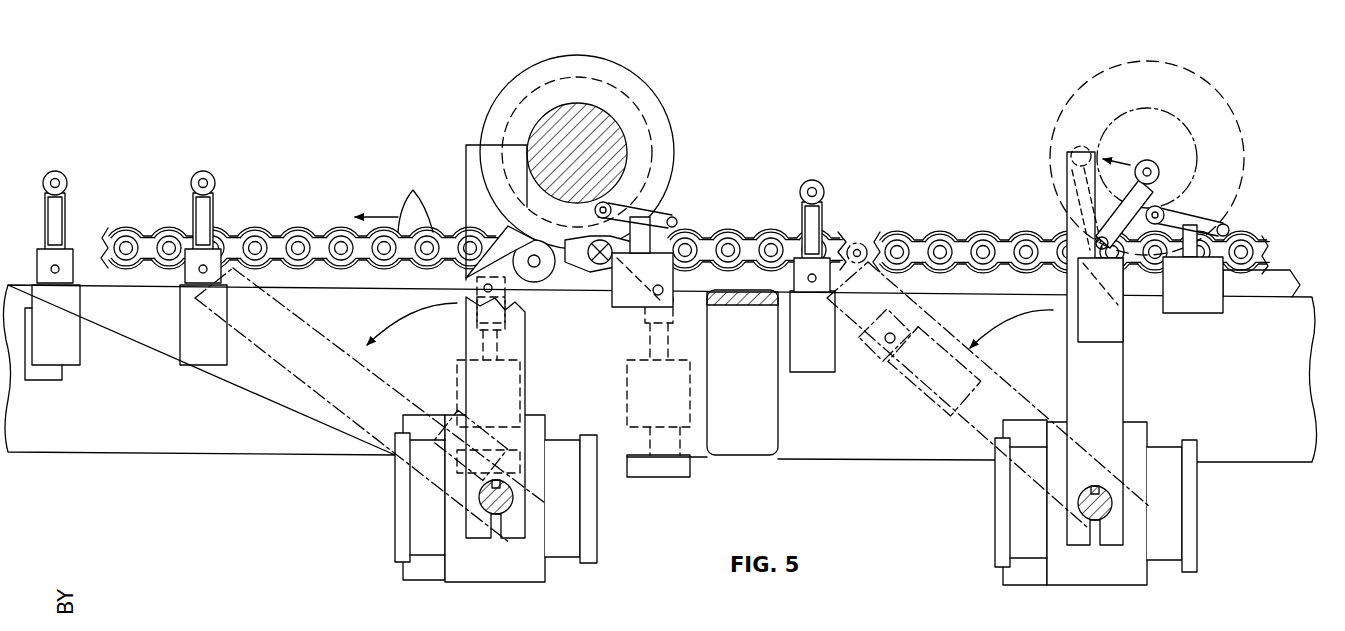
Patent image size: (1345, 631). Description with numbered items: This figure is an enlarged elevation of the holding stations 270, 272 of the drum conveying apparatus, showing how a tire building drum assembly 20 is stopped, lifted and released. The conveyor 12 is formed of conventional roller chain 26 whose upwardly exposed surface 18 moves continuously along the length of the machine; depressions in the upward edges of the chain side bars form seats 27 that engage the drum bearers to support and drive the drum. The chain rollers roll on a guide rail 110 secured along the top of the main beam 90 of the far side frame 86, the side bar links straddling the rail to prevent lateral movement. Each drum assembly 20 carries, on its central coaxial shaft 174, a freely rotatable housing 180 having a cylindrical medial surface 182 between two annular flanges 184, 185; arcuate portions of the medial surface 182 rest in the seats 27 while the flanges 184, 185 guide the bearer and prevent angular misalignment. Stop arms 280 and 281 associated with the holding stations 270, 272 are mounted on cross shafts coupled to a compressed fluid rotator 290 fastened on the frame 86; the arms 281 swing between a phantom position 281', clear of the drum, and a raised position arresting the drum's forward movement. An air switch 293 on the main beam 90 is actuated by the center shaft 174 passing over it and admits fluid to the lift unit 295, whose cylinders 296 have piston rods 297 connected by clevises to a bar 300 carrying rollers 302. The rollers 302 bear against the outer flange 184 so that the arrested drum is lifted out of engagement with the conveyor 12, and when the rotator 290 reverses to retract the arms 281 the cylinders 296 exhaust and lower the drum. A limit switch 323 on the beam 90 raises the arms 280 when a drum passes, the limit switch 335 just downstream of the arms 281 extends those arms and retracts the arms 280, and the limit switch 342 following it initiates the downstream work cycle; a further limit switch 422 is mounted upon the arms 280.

The conveyor 12 is at (285, 225).
The upwardly exposed surface 18 is at (955, 232).
The tire building drum assembly 20 is at (867, 133).
The roller chain 26 is at (138, 243).
The seat 27 is at (416, 197).
The far side frame 86 is at (125, 440).
The main beam 90 is at (218, 432).
The guide rail 110 is at (100, 272).
The central coaxial shaft 174 is at (592, 120).
The housing 180 is at (550, 55).
The cylindrical medial surface 182 is at (648, 115).
The annular flange 184 is at (639, 152).
The annular flange 185 is at (675, 142).
The holding station 270 is at (1063, 158).
The holding station 272 is at (464, 133).
The arm 280 is at (1115, 383).
The arm 281 is at (468, 324).
The retracted position of arm 281' is at (370, 405).
The compressed fluid rotator 290 is at (410, 540).
The air switch 293 is at (682, 228).
The lift unit 295 is at (548, 270).
The cylinder 296 is at (520, 396).
The piston rod 297 is at (477, 348).
The bar 300 is at (522, 283).
The roller 302 is at (596, 264).
The limit switch 323 is at (819, 183).
The limit switch 335 is at (205, 171).
The limit switch 342 is at (54, 171).
The limit switch 422 is at (1110, 323).